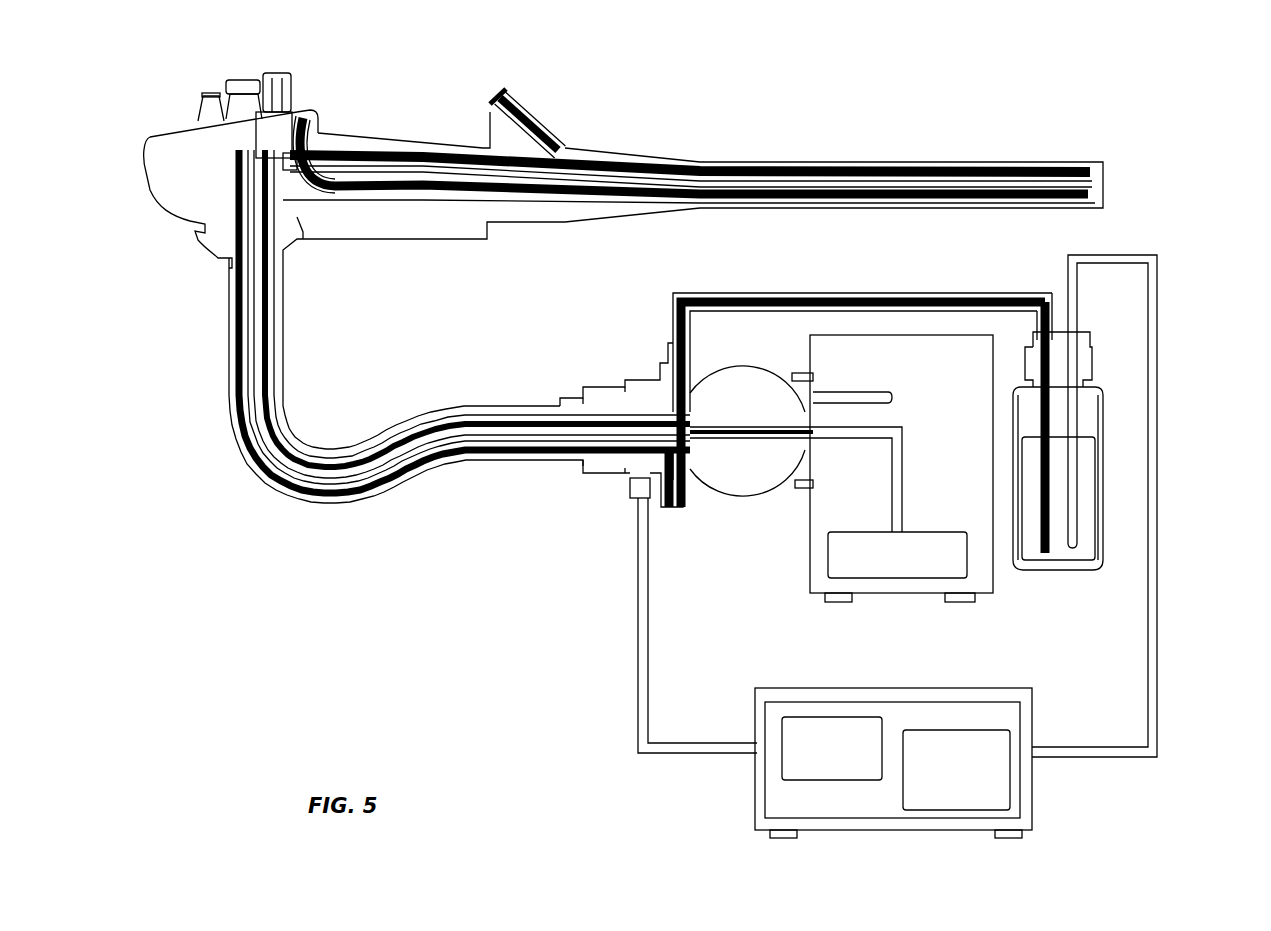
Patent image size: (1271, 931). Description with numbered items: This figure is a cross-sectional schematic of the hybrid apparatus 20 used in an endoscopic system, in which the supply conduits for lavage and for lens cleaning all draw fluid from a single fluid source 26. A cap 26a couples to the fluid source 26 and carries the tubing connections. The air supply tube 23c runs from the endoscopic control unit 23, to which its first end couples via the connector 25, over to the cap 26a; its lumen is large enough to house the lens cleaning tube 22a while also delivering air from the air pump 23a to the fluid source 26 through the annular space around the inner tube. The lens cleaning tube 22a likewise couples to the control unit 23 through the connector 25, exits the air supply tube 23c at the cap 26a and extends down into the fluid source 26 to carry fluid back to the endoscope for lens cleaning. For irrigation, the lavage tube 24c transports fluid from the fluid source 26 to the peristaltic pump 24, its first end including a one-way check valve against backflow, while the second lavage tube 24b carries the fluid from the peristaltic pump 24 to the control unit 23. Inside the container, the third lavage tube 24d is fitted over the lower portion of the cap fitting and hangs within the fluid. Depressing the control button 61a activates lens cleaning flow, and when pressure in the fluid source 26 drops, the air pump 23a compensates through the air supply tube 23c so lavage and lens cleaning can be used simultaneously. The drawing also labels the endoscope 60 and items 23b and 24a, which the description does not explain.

The hybrid apparatus 20 is at (901, 538).
The lens cleaning tube 22a is at (793, 293).
The endoscopic control unit 23 is at (871, 476).
The air pump 23a is at (932, 532).
The exhaust port 23b is at (890, 397).
The air supply tube 23c is at (874, 294).
The peristaltic pump 24 is at (893, 728).
The control circuit 24a is at (945, 730).
The second lavage tube 24b is at (638, 616).
The lavage tube 24c is at (1148, 665).
The third lavage tube 24d is at (1077, 518).
The connector 25 is at (661, 357).
The fluid source 26 is at (1105, 452).
The cap 26a is at (1078, 358).
The universal cord 60 is at (265, 476).
The control button 61a is at (262, 83).